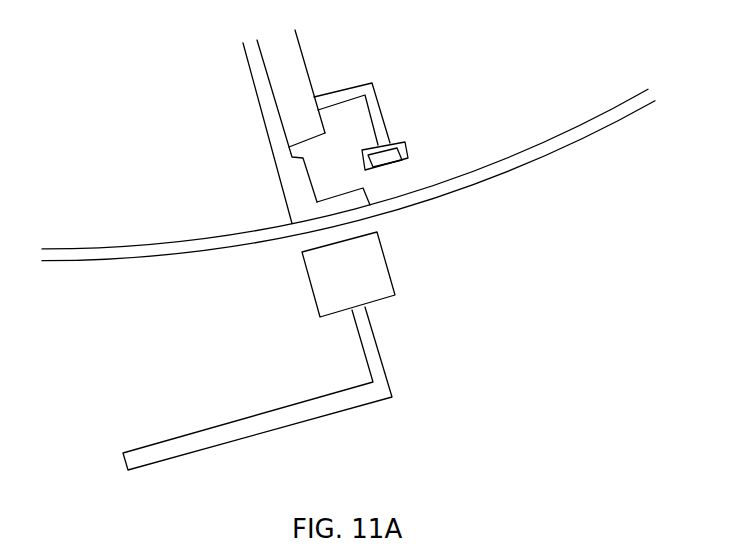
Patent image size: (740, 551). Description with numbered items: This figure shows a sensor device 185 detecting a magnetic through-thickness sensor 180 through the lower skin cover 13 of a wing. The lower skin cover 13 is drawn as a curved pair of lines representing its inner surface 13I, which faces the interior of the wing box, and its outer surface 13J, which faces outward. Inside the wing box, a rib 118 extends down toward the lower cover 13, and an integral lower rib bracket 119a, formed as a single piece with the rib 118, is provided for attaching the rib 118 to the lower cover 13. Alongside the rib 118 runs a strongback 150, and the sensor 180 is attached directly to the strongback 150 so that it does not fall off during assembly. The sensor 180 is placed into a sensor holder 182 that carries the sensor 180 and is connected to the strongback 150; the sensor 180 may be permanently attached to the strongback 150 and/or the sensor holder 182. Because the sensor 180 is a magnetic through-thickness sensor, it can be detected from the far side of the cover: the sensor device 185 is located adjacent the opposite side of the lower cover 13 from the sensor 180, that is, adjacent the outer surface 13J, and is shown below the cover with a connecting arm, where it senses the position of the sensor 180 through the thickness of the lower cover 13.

The lower skin cover 13 is at (348, 205).
The inner surface 13I is at (80, 248).
The outer surface 13J is at (85, 261).
The rib 118 is at (292, 183).
The lower rib bracket 119a is at (360, 198).
The strongback 150 is at (297, 70).
The sensor 180 is at (400, 142).
The sensor holder 182 is at (373, 108).
The sensor device 185 is at (333, 292).